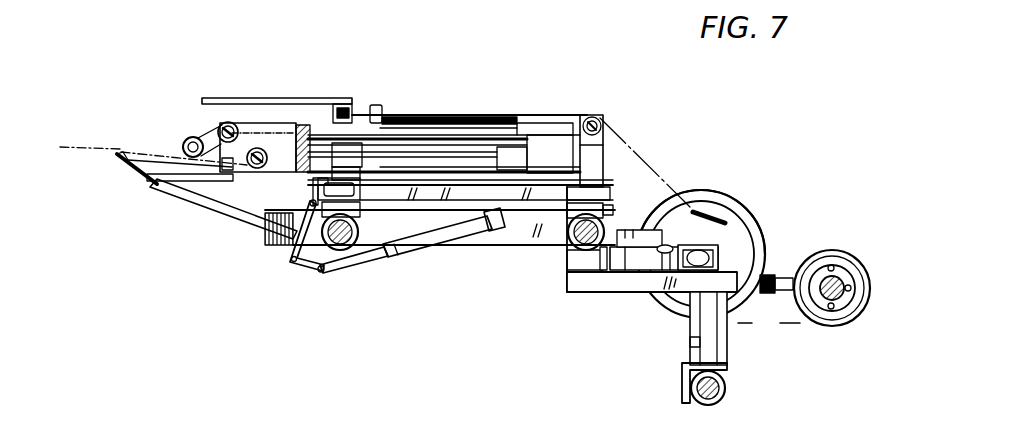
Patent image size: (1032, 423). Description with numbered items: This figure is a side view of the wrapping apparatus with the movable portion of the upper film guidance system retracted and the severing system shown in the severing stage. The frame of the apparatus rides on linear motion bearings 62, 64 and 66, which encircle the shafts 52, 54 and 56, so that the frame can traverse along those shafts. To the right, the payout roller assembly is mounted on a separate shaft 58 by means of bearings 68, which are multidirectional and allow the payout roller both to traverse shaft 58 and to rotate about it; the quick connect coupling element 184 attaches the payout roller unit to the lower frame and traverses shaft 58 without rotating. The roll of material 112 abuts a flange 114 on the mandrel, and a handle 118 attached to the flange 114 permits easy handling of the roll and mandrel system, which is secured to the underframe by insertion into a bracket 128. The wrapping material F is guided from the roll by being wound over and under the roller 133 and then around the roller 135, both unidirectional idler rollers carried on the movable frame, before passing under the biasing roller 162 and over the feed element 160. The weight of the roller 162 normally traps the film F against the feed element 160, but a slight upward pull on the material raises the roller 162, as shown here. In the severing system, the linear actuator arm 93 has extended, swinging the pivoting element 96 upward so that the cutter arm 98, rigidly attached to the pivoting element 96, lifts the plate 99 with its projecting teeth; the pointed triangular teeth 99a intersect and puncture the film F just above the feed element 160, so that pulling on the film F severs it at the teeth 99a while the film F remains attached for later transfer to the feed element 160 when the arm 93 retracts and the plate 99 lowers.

The wrapping material (film) F is at (72, 146).
The plate with projecting teeth 99 is at (120, 166).
The cutting teeth 99a is at (127, 152).
The feed element 160 is at (168, 180).
The cutter arm 98 is at (207, 207).
The biasing element (idler roller) 162 is at (189, 142).
The roller 133 is at (228, 122).
The roller 135 is at (260, 147).
The shaft 52 is at (330, 247).
The pivoting element 96 is at (290, 268).
The linear actuator arm 93 is at (350, 273).
The linear motion bearing 62 is at (356, 250).
The shaft 54 is at (572, 238).
The linear motion bearing 64 is at (578, 268).
The roll of material 112 is at (743, 208).
The flange 114 is at (680, 191).
The handle 118 is at (707, 210).
The bracket 128 is at (722, 262).
The quick connect coupling element 184 is at (766, 296).
The shaft 56 is at (688, 386).
The linear motion bearing 66 is at (727, 393).
The shaft 58 is at (821, 302).
The bearing 68 is at (846, 300).